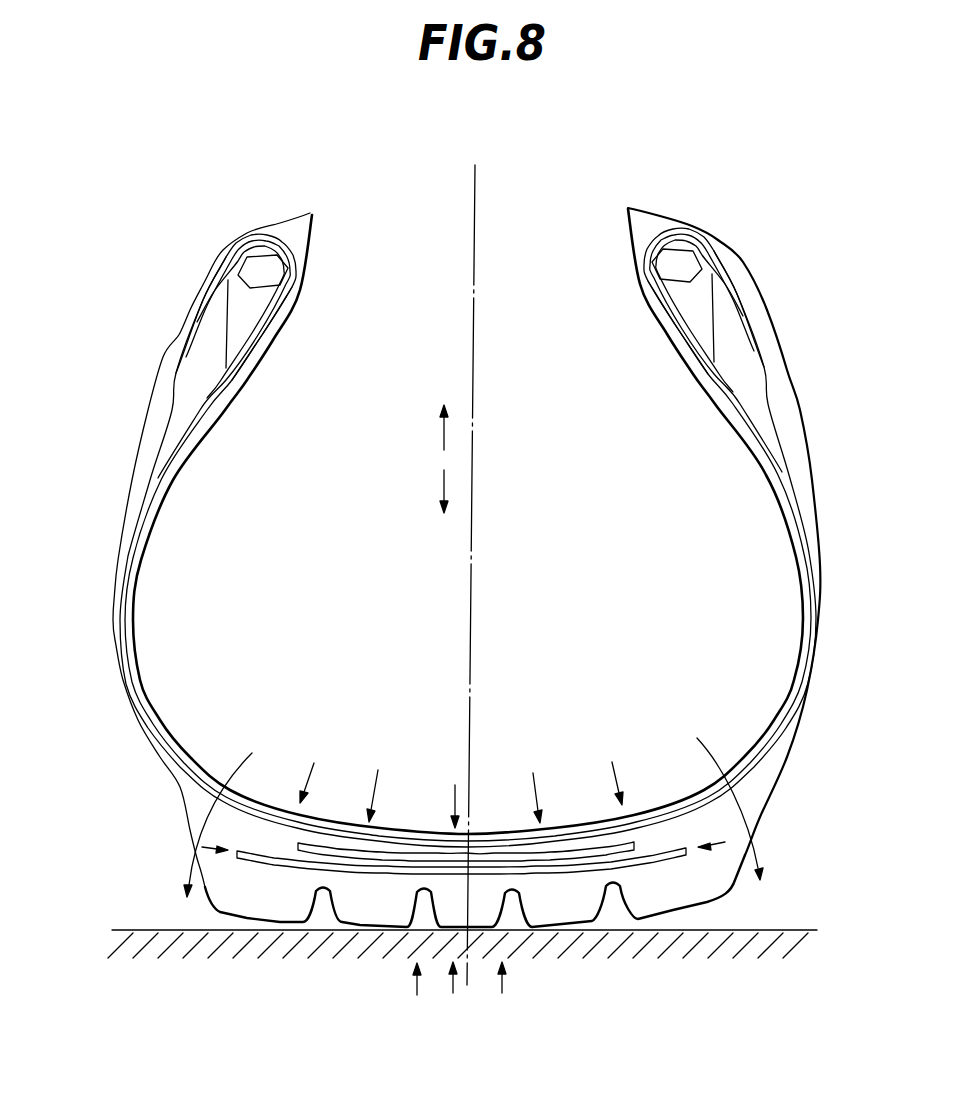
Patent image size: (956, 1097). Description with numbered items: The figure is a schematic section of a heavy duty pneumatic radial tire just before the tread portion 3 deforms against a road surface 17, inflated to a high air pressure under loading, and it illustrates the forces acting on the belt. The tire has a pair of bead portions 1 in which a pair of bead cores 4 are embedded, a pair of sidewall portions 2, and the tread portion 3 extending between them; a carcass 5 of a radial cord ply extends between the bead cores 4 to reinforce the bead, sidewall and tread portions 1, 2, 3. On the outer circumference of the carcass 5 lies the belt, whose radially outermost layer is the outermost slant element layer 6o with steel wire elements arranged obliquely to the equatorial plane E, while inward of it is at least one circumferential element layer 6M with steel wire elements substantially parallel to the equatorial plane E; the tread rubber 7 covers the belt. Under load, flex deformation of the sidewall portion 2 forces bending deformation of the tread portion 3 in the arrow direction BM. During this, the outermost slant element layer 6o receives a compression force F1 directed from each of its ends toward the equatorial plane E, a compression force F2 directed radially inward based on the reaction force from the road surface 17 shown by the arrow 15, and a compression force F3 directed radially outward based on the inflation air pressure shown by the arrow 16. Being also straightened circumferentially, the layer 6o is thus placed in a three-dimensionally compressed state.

The bead portion 1 is at (180, 283).
The sidewall portion 2 is at (100, 591).
The tread portion 3 is at (137, 510).
The bead core 4 is at (265, 262).
The carcass 5 is at (137, 662).
The circumferential element layer 6M is at (298, 847).
The outermost slant element layer 6o is at (260, 865).
The tread rubber 7 is at (577, 915).
The arrow showing reaction force from the road surface 15 is at (440, 428).
The arrow showing air pressure 16 is at (440, 490).
The road surface 17 is at (800, 927).
The equatorial plane E is at (475, 213).
The bending deformation direction BM is at (240, 767).
The compression force from both ends F1 is at (206, 846).
The radially inward compression force F2 is at (453, 990).
The radially outward compression force F3 is at (455, 797).